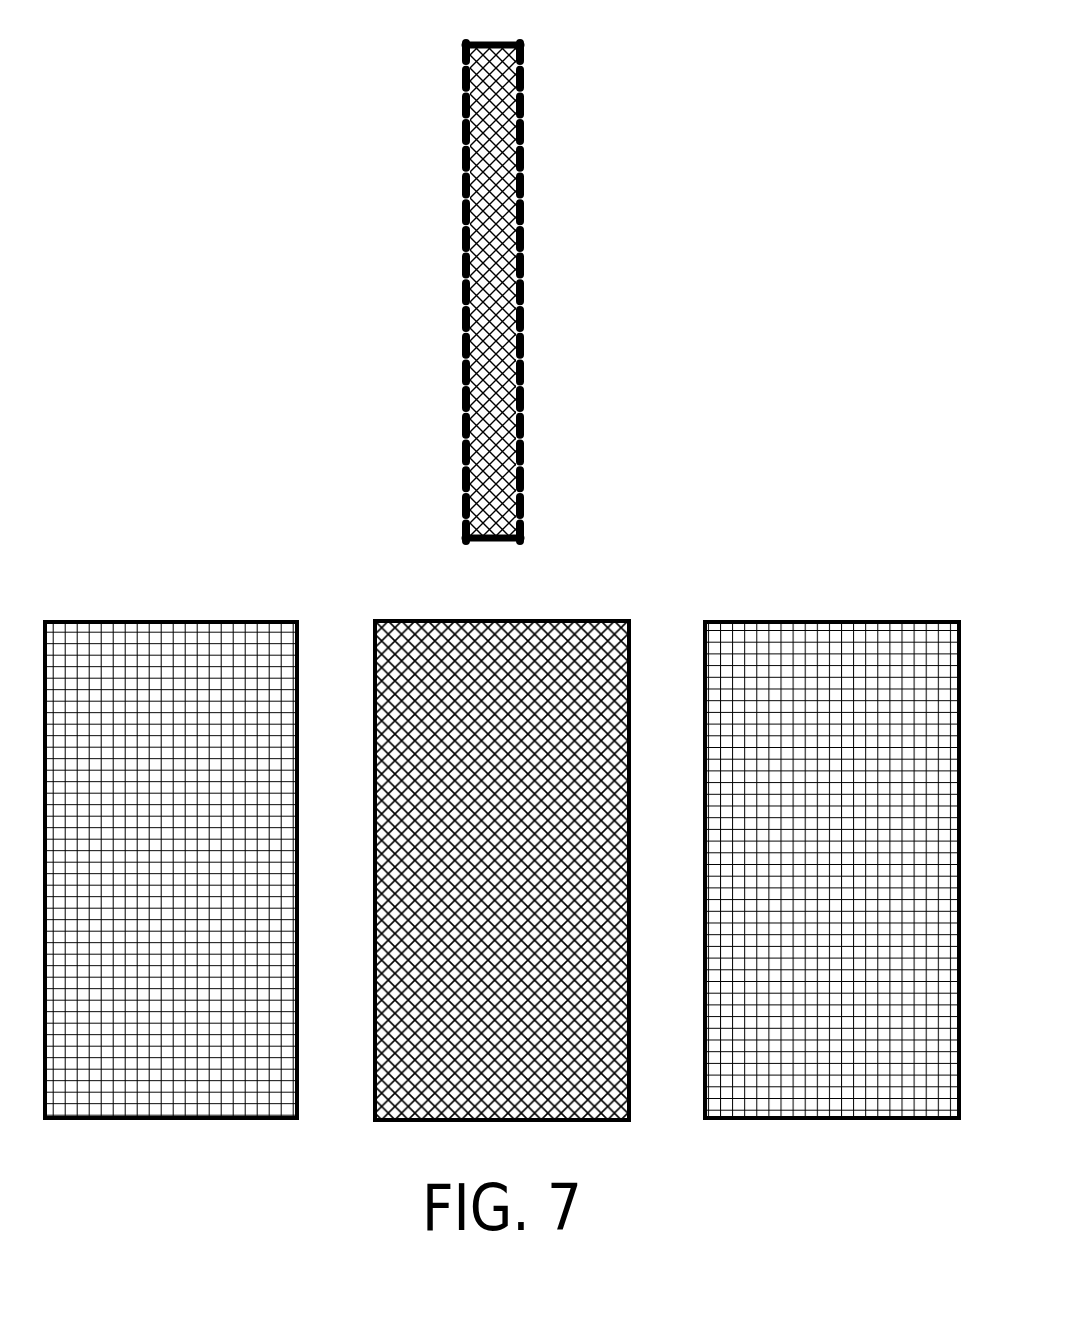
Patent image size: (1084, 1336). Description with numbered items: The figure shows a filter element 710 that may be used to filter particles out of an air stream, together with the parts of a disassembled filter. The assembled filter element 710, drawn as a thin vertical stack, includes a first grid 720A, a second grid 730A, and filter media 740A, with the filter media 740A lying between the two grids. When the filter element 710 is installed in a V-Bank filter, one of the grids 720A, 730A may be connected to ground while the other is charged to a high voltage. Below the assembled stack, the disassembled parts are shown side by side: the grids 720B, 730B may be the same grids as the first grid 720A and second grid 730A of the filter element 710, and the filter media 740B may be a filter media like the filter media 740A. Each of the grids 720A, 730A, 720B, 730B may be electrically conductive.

The filter element 710 is at (499, 308).
The first grid 720A is at (524, 157).
The second grid 730A is at (461, 188).
The filter media 740A is at (493, 335).
The first grid 720B is at (858, 620).
The second grid 730B is at (262, 621).
The filter media 740B is at (462, 620).